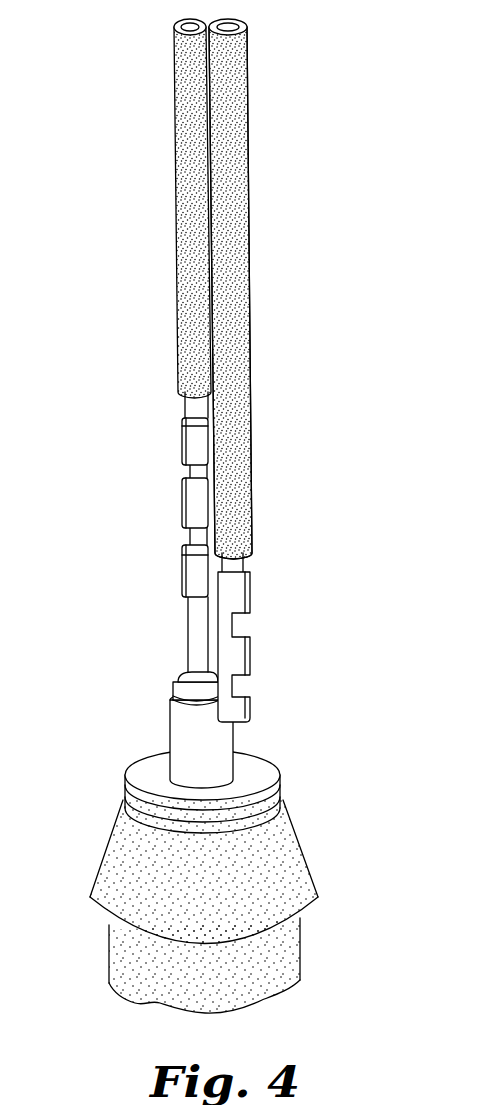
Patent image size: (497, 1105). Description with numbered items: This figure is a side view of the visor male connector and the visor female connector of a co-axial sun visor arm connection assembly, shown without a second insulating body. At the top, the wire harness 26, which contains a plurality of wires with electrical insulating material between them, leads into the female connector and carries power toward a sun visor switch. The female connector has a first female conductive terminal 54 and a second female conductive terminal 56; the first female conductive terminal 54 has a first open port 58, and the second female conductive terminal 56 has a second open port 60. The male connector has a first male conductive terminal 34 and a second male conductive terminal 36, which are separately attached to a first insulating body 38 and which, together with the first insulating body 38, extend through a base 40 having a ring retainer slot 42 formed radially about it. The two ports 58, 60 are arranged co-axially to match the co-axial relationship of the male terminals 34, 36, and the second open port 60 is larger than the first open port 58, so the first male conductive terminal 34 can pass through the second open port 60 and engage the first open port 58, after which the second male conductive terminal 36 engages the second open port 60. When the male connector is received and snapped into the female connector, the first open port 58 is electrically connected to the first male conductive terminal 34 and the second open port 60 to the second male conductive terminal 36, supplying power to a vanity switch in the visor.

The wire harness 26 is at (178, 252).
The first female conductive terminal 54 is at (188, 410).
The first open port 58 is at (190, 575).
The first male conductive terminal 34 is at (197, 622).
The first insulating body 38 is at (183, 672).
The second male conductive terminal 36 is at (178, 690).
The base 40 is at (145, 777).
The ring retainer slot 42 is at (133, 808).
The second female conductive terminal 56 is at (235, 565).
The second open port 60 is at (217, 763).